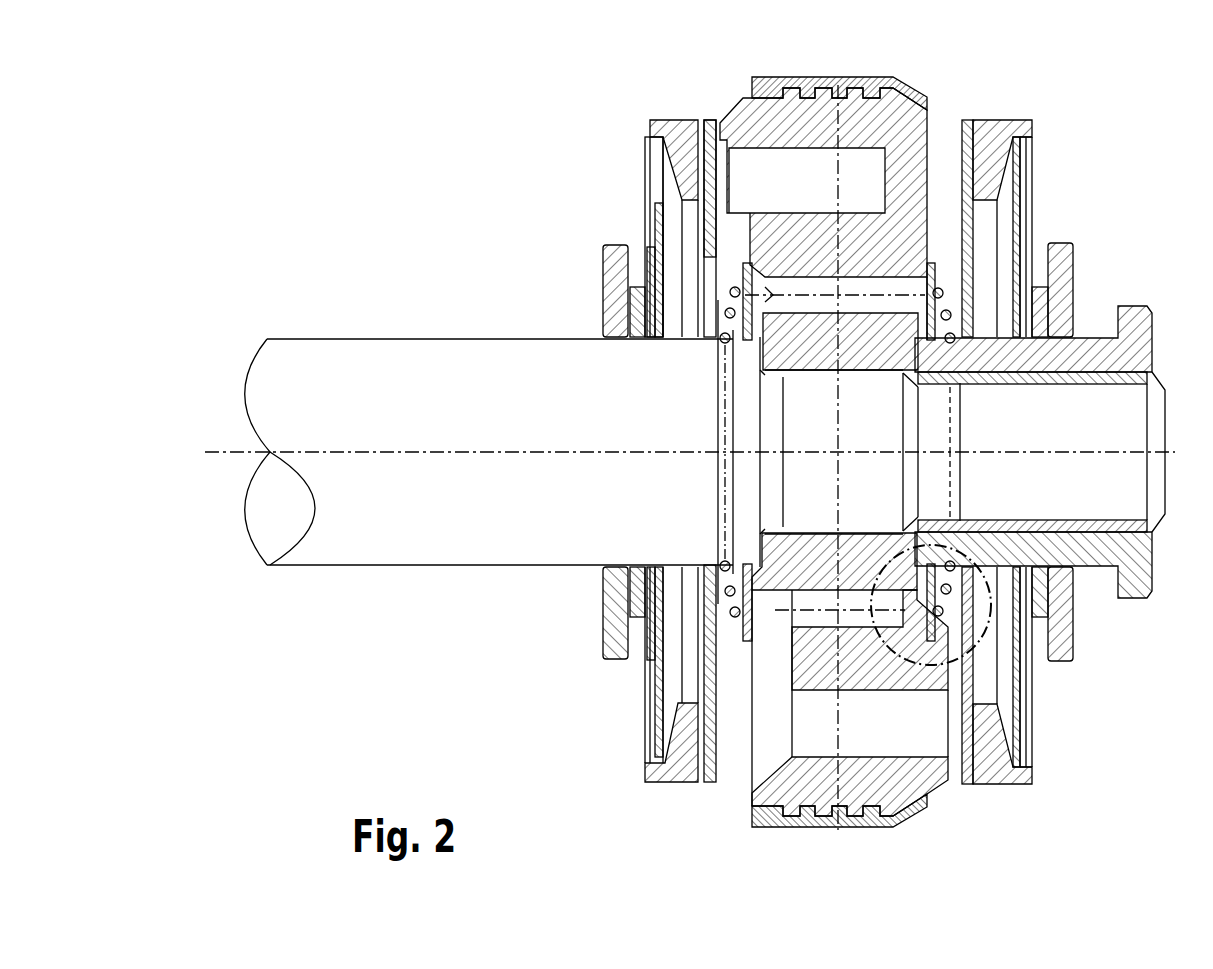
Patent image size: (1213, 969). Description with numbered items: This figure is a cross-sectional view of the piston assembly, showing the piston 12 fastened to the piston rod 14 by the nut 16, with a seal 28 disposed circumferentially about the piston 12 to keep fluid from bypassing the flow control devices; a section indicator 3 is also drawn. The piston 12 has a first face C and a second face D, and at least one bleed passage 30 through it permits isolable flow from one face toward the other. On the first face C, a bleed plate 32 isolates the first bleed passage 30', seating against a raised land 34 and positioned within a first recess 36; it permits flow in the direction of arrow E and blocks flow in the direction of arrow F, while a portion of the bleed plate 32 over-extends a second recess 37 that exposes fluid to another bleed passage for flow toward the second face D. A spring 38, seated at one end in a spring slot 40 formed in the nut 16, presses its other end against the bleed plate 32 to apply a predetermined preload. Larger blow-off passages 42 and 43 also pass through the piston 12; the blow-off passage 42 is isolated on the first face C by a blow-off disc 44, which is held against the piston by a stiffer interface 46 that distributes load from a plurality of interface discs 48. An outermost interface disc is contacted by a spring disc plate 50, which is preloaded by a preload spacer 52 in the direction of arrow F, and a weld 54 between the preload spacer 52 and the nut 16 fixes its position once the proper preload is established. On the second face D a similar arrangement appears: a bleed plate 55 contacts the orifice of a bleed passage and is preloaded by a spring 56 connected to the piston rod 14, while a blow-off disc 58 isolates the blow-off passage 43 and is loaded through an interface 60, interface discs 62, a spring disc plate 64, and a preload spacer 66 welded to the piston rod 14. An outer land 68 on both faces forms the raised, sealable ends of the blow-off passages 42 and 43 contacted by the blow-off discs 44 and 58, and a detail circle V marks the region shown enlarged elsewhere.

The piston 12 is at (766, 793).
The piston rod 14 is at (318, 352).
The nut 16 is at (1150, 595).
The seal 28 is at (915, 813).
The bleed passage 30 is at (959, 235).
The first bleed passage 30' is at (625, 757).
The bleed plate 32 is at (997, 648).
The raised land 34 is at (923, 568).
The first recess 36 is at (970, 196).
The second recess 37 is at (902, 175).
The spring 38 is at (1000, 612).
The spring slot 40 is at (955, 567).
The blow-off passage 42 is at (909, 722).
The blow-off passage 43 is at (803, 177).
The blow-off disc 44 is at (968, 120).
The interface 46 is at (995, 135).
The interface discs 48 is at (1024, 193).
The spring disc plate 50 is at (1040, 290).
The preload spacer 52 is at (1068, 273).
The weld 54 is at (1076, 337).
The bleed plate 55 is at (806, 601).
The spring 56 is at (731, 598).
The blow-off disc 58 is at (713, 152).
The interface 60 is at (677, 128).
The interface discs 62 is at (660, 203).
The spring disc plate 64 is at (647, 287).
The preload spacer 66 is at (612, 255).
The outer land 68 is at (965, 765).
The first face C is at (940, 195).
The second face D is at (812, 293).
The arrow E is at (928, 866).
The arrow F is at (875, 62).
The detail V is at (990, 655).
The section line 3- 3 is at (718, 102).